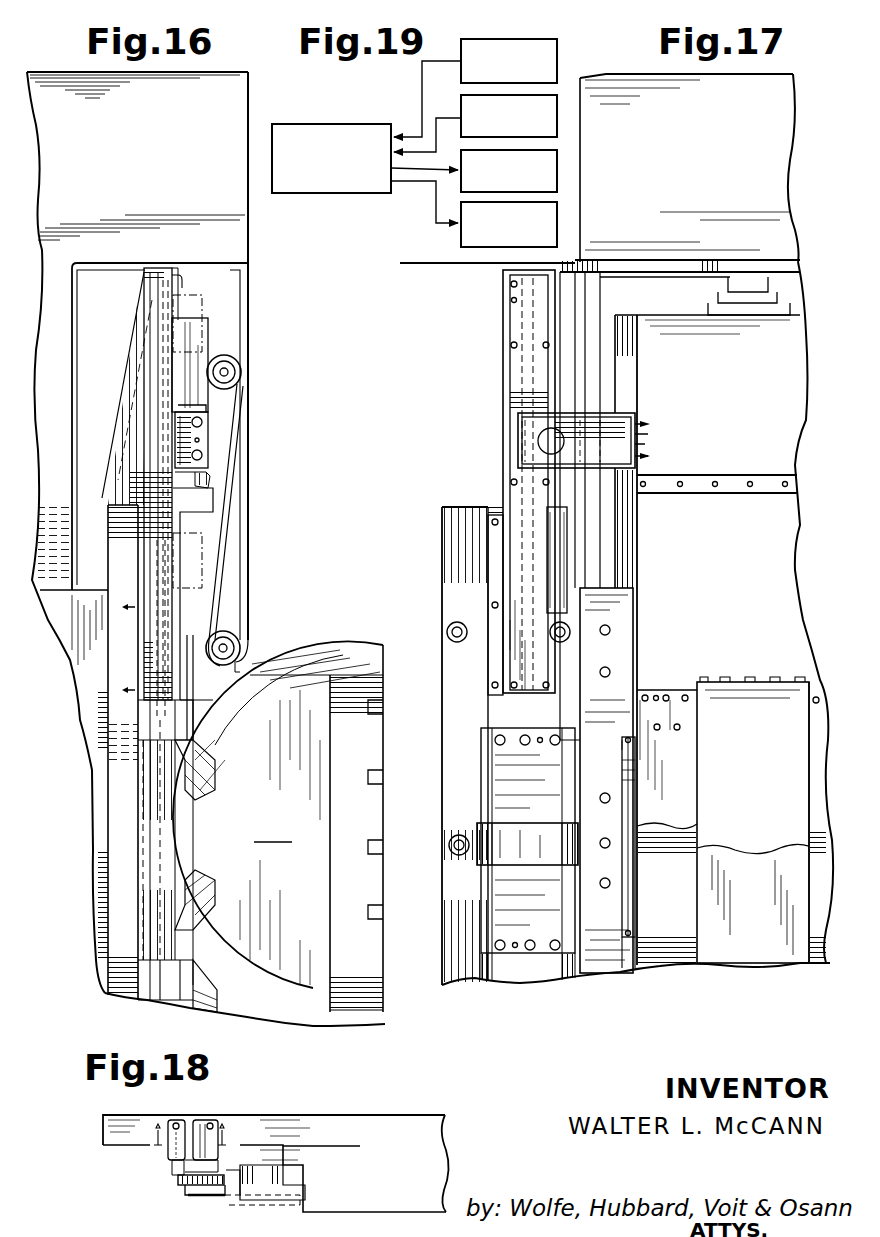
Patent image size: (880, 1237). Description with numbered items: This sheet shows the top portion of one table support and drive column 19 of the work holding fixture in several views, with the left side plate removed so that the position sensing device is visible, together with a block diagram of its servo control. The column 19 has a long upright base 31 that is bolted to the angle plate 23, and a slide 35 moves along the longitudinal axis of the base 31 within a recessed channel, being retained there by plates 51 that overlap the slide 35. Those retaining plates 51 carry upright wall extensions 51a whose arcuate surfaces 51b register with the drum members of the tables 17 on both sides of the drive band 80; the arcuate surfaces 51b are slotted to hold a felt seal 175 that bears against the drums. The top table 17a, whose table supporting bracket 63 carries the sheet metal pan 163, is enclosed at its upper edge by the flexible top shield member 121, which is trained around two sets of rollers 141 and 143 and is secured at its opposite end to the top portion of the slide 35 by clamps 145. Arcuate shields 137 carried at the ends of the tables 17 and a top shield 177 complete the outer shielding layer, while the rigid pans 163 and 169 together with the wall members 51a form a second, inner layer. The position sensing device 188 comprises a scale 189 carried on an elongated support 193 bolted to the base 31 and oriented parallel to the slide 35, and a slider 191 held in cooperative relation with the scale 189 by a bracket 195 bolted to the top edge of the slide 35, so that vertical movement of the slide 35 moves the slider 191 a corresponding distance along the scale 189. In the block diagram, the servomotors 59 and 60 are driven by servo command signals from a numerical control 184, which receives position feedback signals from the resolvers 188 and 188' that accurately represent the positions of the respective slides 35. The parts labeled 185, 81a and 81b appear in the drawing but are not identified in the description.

In FIG. 16, the table 17 is at (378, 638).
In FIG. 16, the top table 17a is at (272, 830).
In FIG. 16, the table support and drive column 19 is at (263, 330).
In FIG. 16, the angle plate 23 is at (90, 764).
In FIG. 16, the upright base 31 is at (108, 546).
In FIG. 17, the upright base 31 is at (446, 505).
In FIG. 16, the slide member 35 is at (183, 510).
In FIG. 17, the slide member 35 is at (612, 325).
In FIG. 17, the slide retaining plate 51 is at (626, 650).
In FIG. 17, the upright wall extension 51a is at (628, 968).
In FIG. 17, the arcuate surface 51b is at (676, 814).
In FIG. 19, the servomotor 59 is at (460, 184).
In FIG. 19, the servomotor 60 is at (460, 238).
In FIG. 17, the table supporting bracket 63 is at (480, 862).
In FIG. 17, the drive band 80 is at (738, 698).
In FIG. 17, the base portion 81a is at (722, 998).
In FIG. 17, the base portion 81b is at (818, 963).
In FIG. 16, the top flexible shield member 121 is at (300, 700).
In FIG. 16, the arcuate shield 137 is at (247, 1005).
In FIG. 16, the rollers 141 is at (232, 636).
In FIG. 16, the rollers 143 is at (242, 380).
In FIG. 16, the clamps 145 is at (210, 490).
In FIG. 16, the sheet metal pan 163 is at (185, 1010).
In FIG. 16, the rigid long pan 169 is at (194, 708).
In FIG. 17, the felt seal 175 is at (630, 888).
In FIG. 16, the top shield 177 is at (246, 470).
In FIG. 19, the numerical control 184 is at (316, 196).
In FIG. 16, the housing 185 is at (246, 90).
In FIG. 17, the housing 185 is at (572, 90).
In FIG. 16, the resolver 188 is at (238, 345).
In FIG. 19, the resolver 188 is at (485, 108).
In FIG. 17, the resolver 188 is at (509, 506).
In FIG. 18, the resolver 188 is at (241, 1163).
In FIG. 19, the resolver 188' is at (517, 42).
In FIG. 16, the scale 189 is at (170, 292).
In FIG. 17, the scale 189 is at (512, 328).
In FIG. 18, the scale 189 is at (178, 1178).
In FIG. 16, the slider 191 is at (178, 436).
In FIG. 17, the slider 191 is at (518, 446).
In FIG. 18, the slider 191 is at (182, 1186).
In FIG. 16, the elongated support 193 is at (155, 633).
In FIG. 17, the elongated support 193 is at (494, 544).
In FIG. 18, the elongated support 193 is at (168, 1166).
In FIG. 16, the bracket 195 is at (205, 403).
In FIG. 17, the bracket 195 is at (612, 413).
In FIG. 18, the bracket 195 is at (194, 1197).